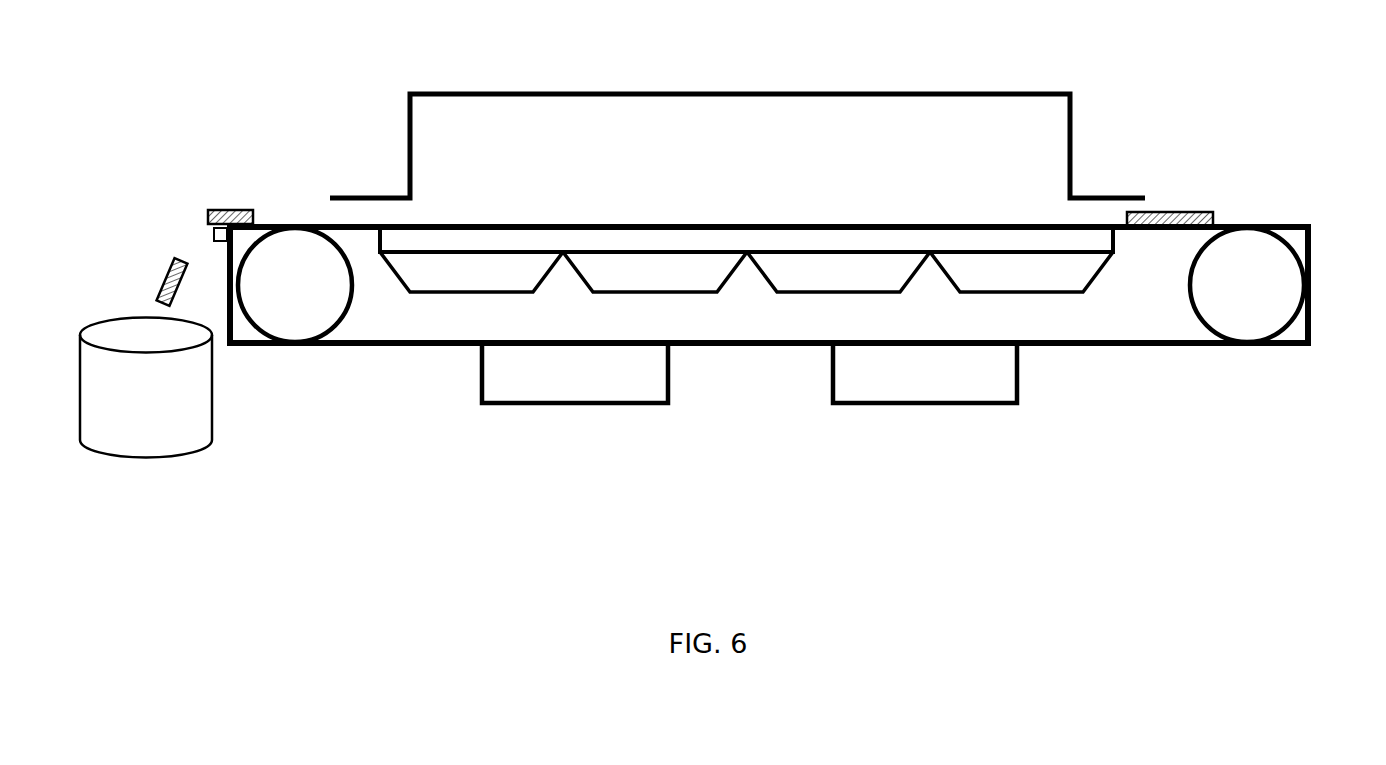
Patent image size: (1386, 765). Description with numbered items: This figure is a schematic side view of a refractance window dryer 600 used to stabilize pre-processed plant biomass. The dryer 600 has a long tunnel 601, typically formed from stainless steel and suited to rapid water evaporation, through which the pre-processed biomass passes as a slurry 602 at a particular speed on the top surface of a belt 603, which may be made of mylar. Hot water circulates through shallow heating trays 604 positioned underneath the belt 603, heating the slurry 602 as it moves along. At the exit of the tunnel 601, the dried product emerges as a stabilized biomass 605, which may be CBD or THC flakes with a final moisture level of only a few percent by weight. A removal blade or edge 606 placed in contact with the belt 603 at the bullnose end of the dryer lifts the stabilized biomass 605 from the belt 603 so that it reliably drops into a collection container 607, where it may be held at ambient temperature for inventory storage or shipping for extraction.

The refractance window dryer 600 is at (727, 60).
The tunnel 601 is at (1076, 123).
The slurry 602 is at (1178, 207).
The belt 603 is at (1294, 218).
The heating trays 604 is at (746, 259).
The stabilized biomass 605 is at (247, 206).
The removal blade or edge 606 is at (206, 237).
The collection container 607 is at (146, 388).